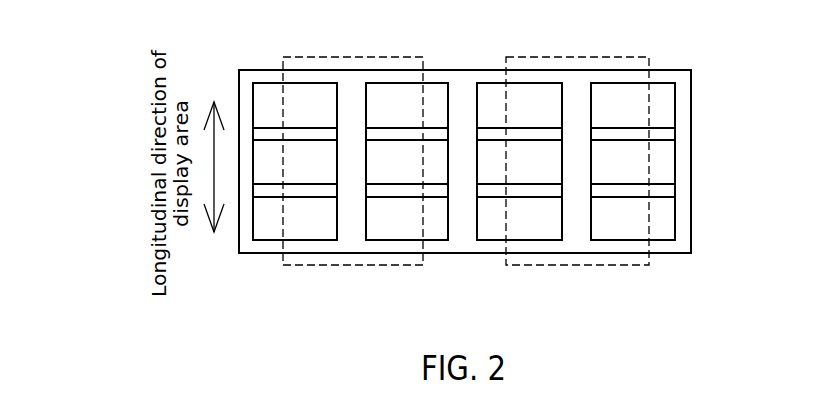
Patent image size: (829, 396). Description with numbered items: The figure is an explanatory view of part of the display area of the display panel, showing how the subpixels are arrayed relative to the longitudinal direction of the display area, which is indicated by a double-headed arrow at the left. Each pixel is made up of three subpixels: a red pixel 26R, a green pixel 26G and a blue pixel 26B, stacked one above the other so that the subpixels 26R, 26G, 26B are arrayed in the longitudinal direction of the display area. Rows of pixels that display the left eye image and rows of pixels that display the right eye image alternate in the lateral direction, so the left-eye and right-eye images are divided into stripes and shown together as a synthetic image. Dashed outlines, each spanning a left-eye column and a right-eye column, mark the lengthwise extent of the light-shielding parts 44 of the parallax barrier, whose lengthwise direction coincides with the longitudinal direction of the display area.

The red pixel 26R is at (268, 98).
The green pixel 26G is at (266, 175).
The blue pixel 26B is at (312, 230).
The light-shielding part 44 is at (349, 268).